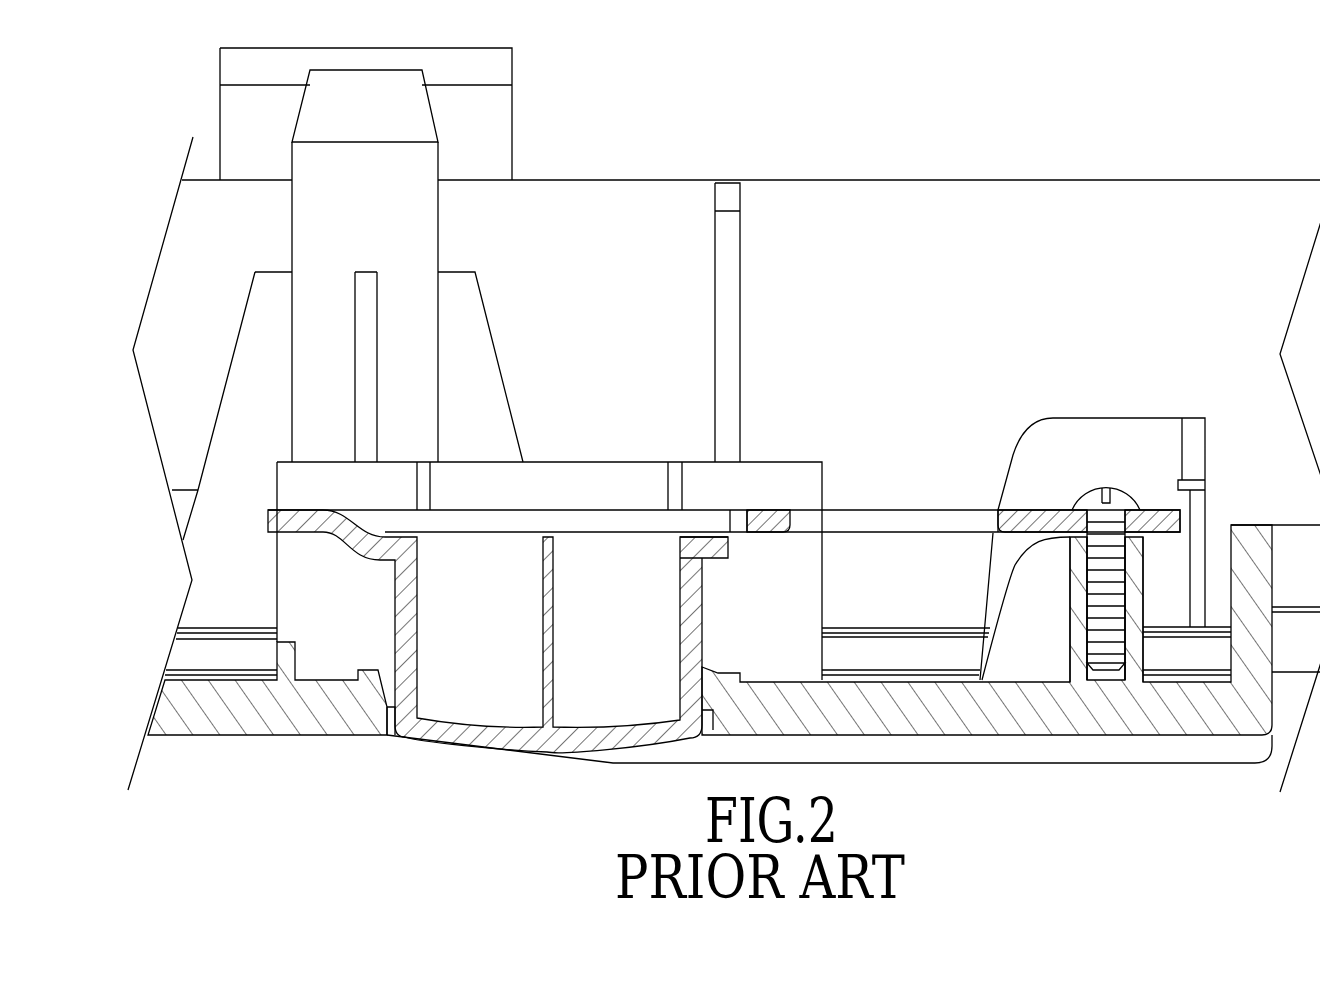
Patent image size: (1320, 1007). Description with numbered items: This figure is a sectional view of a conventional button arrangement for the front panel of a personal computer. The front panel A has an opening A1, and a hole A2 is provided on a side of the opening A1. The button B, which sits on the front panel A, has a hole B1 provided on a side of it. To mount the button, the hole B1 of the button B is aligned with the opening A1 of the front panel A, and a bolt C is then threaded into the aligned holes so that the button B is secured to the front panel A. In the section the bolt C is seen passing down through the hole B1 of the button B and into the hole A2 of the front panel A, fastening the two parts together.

The front panel A is at (935, 735).
The opening A1 is at (392, 737).
The hole A2 is at (1077, 606).
The button B is at (887, 510).
The hole B1 is at (1070, 517).
The bolt C is at (1120, 497).